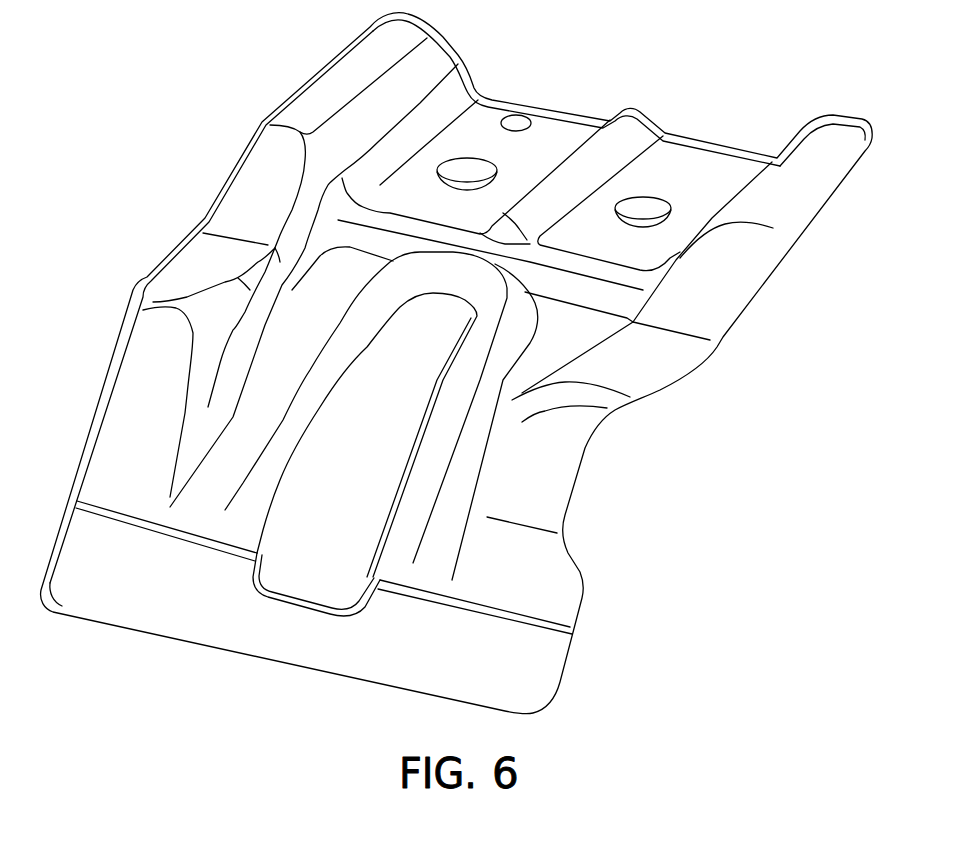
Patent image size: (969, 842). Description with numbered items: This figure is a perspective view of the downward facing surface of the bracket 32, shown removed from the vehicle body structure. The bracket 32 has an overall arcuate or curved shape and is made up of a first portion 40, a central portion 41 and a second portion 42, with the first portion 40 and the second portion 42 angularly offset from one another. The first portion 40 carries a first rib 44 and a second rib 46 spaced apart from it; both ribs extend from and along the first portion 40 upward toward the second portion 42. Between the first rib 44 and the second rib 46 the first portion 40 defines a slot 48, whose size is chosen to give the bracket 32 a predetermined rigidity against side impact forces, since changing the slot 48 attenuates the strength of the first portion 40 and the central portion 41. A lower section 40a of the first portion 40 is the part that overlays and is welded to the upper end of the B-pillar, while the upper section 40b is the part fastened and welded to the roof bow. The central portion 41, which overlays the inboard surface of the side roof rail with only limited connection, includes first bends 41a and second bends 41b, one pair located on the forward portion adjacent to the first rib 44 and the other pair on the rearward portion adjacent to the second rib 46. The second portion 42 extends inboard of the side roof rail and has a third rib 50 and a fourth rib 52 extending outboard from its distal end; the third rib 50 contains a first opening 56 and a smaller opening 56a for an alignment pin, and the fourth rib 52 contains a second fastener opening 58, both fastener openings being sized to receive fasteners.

The bracket 32 is at (203, 90).
The first portion 40 is at (127, 442).
The lower section 40a is at (177, 603).
The upper section 40b is at (827, 157).
The central portion 41 is at (203, 263).
The first bends 41a is at (237, 237).
The second bends 41b is at (153, 303).
The second portion 42 is at (340, 85).
The first rib 44 is at (275, 373).
The second rib 46 is at (480, 460).
The slot 48 is at (390, 527).
The third rib 50 is at (553, 140).
The fourth rib 52 is at (695, 176).
The first opening 56 is at (468, 168).
The smaller opening 56a is at (518, 130).
The second fastener opening 58 is at (645, 210).